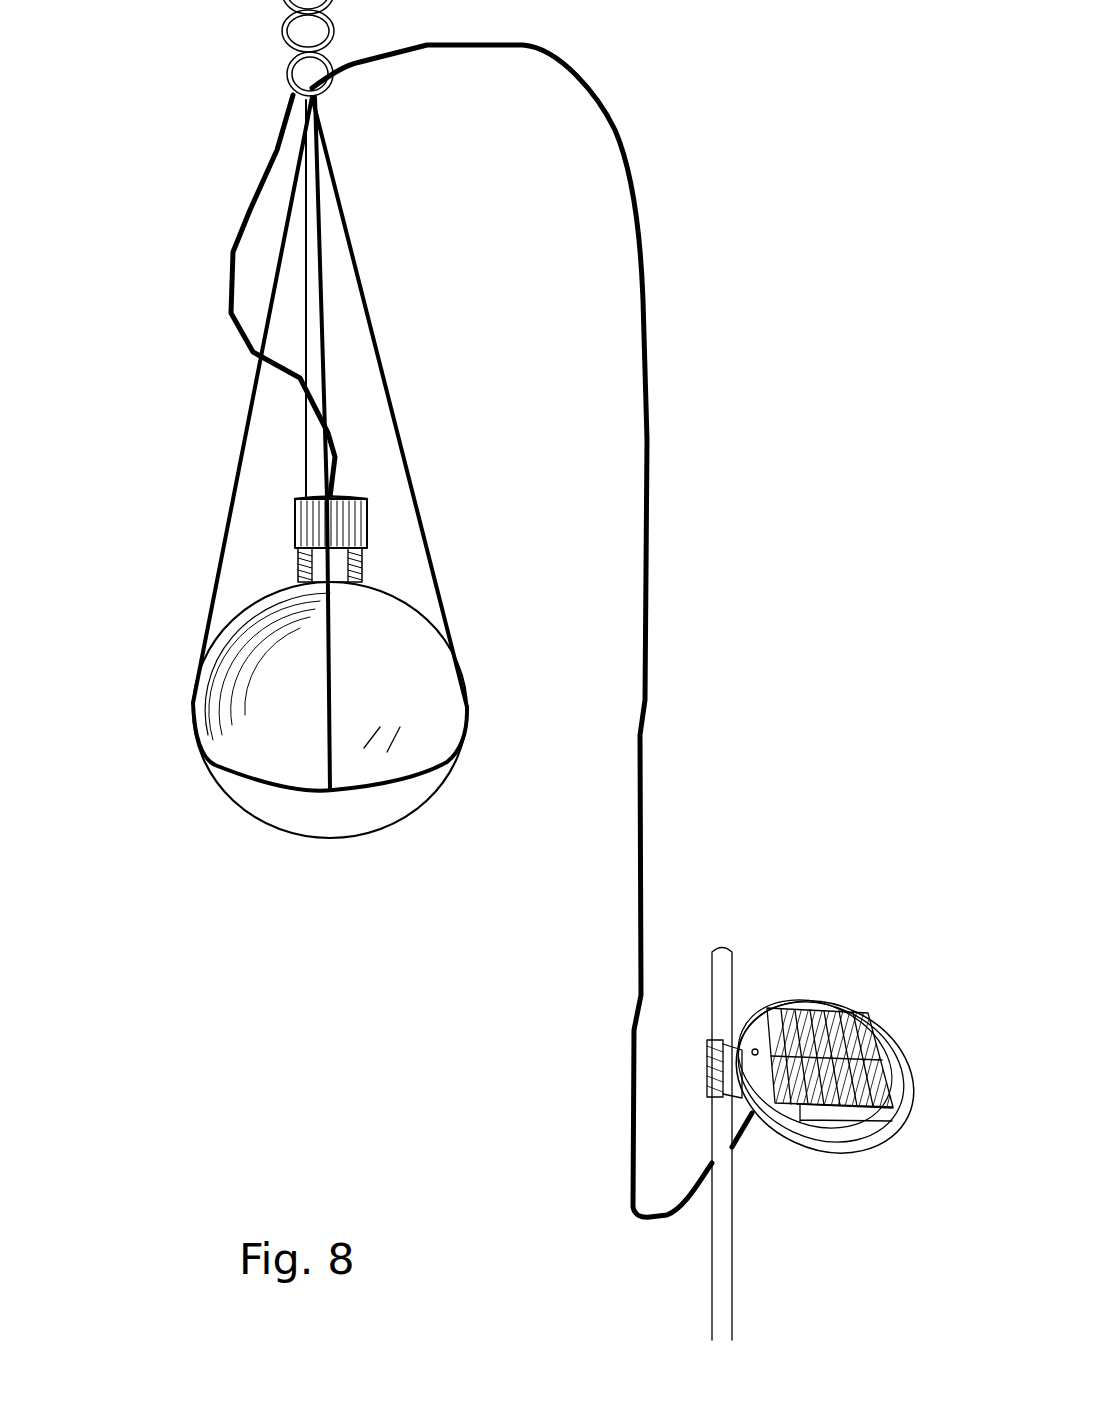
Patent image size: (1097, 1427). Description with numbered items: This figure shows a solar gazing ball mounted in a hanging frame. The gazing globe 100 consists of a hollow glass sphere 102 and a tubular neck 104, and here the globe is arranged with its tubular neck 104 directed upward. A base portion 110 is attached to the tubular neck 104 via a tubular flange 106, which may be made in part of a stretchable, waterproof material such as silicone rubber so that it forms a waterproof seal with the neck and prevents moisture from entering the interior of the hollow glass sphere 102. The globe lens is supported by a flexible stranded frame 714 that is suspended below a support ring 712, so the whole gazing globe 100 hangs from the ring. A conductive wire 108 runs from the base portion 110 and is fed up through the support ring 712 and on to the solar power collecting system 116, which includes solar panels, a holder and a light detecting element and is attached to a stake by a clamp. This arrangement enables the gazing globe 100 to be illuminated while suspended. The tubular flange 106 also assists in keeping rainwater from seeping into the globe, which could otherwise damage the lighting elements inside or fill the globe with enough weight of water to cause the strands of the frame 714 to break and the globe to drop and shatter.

The gazing globe 100 is at (323, 674).
The hollow glass sphere 102 is at (331, 846).
The tubular neck 104 is at (281, 569).
The tubular flange 106 is at (281, 513).
The conductive wire 108 is at (622, 868).
The base portion 110 is at (360, 490).
The solar power collecting system 116 is at (818, 963).
The support ring 712 is at (268, 15).
The flexible stranded frame 714 is at (240, 387).